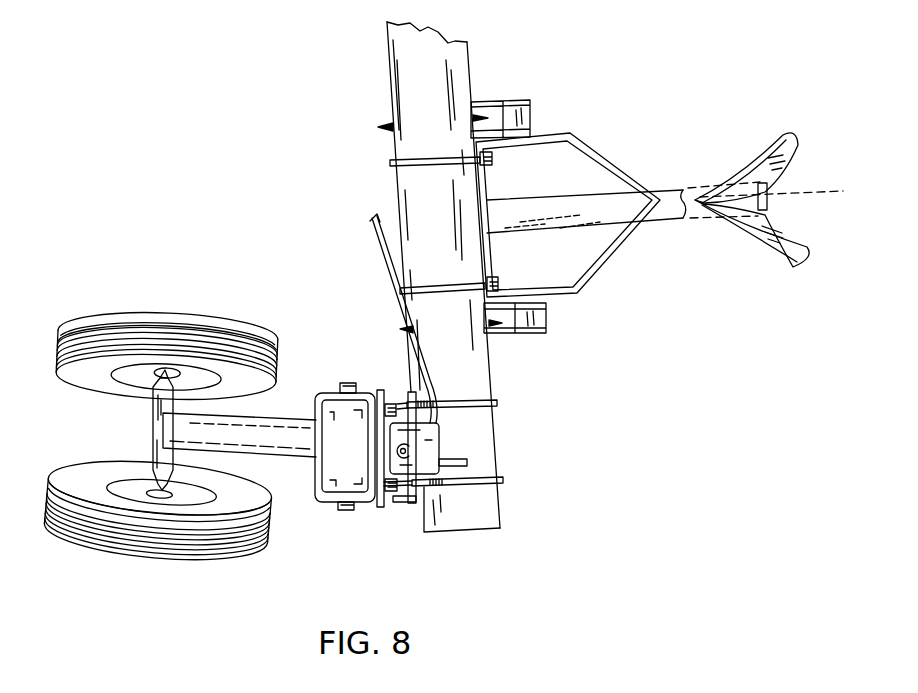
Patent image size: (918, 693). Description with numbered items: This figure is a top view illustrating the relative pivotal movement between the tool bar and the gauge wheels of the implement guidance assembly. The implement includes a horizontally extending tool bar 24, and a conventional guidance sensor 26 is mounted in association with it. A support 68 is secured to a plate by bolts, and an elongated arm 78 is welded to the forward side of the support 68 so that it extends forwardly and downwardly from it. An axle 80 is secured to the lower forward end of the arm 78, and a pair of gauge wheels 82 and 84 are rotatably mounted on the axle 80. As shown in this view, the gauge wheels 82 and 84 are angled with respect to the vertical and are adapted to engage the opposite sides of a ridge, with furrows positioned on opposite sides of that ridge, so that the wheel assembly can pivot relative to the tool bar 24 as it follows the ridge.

The tool bar 24 is at (493, 377).
The guidance sensor 26 is at (445, 440).
The support 68 is at (361, 505).
The elongated arm 78 is at (270, 430).
The axle 80 is at (160, 411).
The gauge wheel 82 is at (147, 322).
The gauge wheel 84 is at (112, 546).